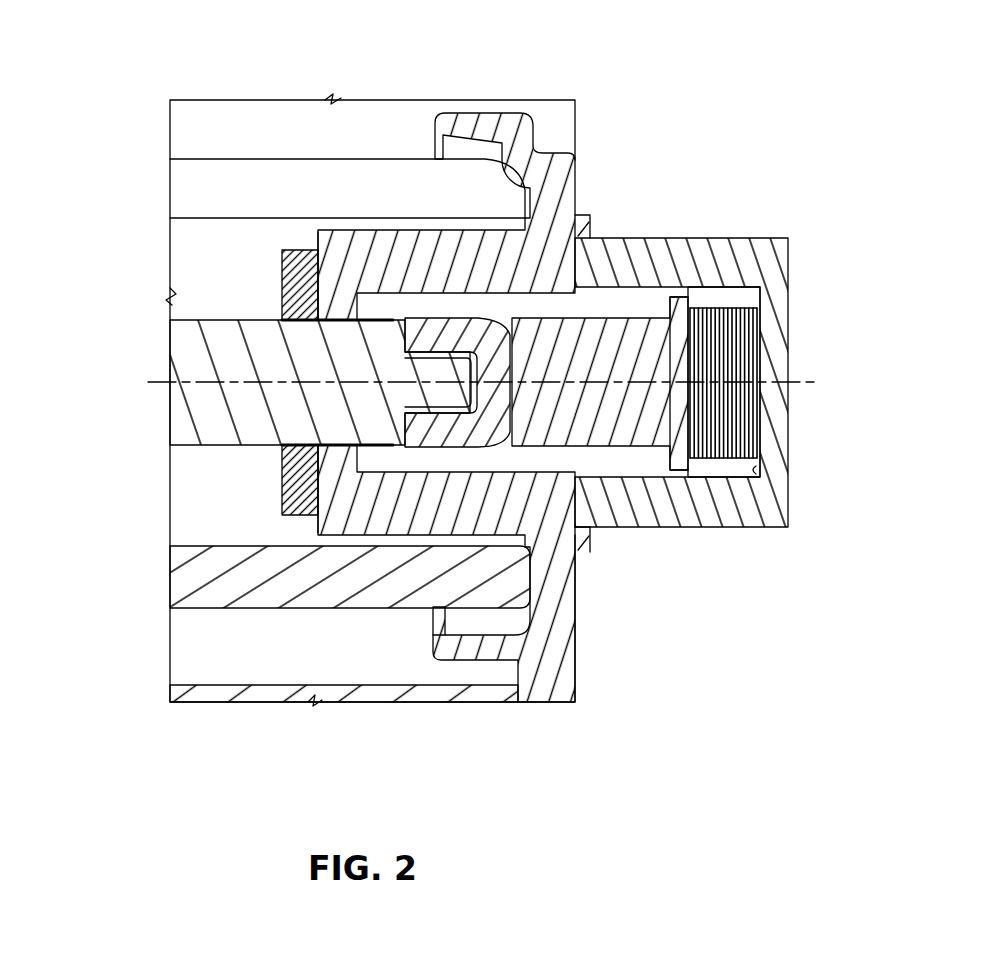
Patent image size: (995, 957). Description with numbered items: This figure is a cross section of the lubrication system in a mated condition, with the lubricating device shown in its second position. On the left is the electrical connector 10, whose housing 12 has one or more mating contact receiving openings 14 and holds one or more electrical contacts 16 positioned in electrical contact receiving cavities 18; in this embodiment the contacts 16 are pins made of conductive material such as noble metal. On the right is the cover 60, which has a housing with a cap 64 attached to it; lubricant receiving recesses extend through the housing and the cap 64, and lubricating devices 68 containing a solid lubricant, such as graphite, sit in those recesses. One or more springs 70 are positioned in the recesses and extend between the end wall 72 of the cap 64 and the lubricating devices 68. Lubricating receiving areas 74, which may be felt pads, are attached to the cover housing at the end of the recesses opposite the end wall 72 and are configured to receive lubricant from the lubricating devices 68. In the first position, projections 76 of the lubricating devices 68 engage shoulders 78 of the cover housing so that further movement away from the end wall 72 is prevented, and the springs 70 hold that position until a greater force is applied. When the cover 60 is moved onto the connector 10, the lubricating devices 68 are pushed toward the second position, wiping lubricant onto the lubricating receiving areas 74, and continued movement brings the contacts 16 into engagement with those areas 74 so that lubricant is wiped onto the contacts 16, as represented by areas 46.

The electrical connector 10 is at (250, 733).
The housing 12 is at (362, 703).
The mating contact receiving opening 14 is at (177, 643).
The electrical contact 16 is at (207, 395).
The electrical contact receiving cavity 18 is at (228, 307).
The areas 46 is at (368, 318).
The cover 60 is at (627, 190).
The cap 64 is at (790, 256).
The lubricating device 68 is at (623, 318).
The spring 70 is at (742, 348).
The end wall 72 is at (756, 472).
The lubricating receiving area 74 is at (290, 322).
The projection 76 is at (686, 300).
The shoulder 78 is at (340, 302).